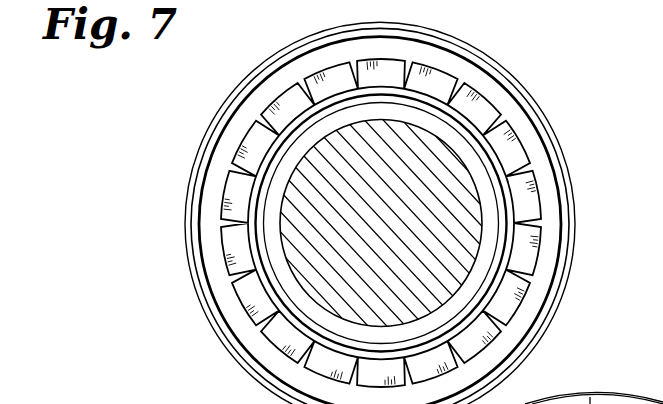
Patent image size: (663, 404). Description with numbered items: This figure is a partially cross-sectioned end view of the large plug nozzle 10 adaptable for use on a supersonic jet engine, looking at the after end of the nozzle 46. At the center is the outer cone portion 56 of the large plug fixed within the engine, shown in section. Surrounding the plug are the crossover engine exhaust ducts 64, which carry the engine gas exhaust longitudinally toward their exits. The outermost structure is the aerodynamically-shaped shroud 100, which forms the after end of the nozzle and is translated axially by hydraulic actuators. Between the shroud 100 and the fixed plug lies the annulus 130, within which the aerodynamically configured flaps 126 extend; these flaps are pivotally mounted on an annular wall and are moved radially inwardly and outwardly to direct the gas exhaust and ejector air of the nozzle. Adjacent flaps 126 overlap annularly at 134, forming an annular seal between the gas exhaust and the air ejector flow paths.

The plug nozzle 10 is at (596, 263).
The after end of the nozzle 46 is at (212, 309).
The outer cone portion 56 is at (447, 197).
The crossover engine exhaust ducts 64 is at (640, 402).
The shroud 100 is at (237, 332).
The flaps 126 is at (252, 208).
The annulus 130 is at (218, 204).
The annular overlap of the flaps 134 is at (258, 118).